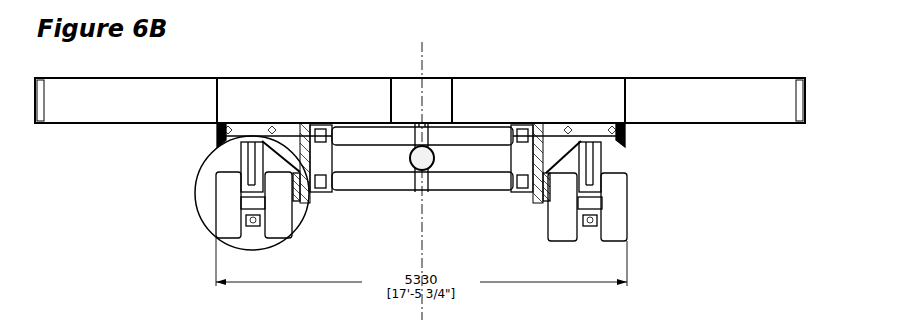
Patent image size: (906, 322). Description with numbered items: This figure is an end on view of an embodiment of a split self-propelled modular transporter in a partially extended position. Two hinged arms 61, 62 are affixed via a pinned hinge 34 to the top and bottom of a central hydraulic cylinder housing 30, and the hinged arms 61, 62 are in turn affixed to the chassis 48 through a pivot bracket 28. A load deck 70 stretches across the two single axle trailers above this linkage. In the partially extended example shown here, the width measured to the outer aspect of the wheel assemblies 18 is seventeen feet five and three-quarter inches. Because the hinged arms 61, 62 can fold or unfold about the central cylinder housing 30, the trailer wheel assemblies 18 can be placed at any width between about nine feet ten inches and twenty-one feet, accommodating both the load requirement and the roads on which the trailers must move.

The load deck 70 is at (647, 78).
The pivot bracket 28 is at (532, 123).
The chassis 48 is at (296, 133).
The hinged arm 61 is at (363, 128).
The hinged arm 62 is at (374, 184).
The pinned hinge 34 is at (422, 127).
The central hydraulic cylinder housing 30 is at (437, 160).
The wheel assembly 18 is at (197, 172).